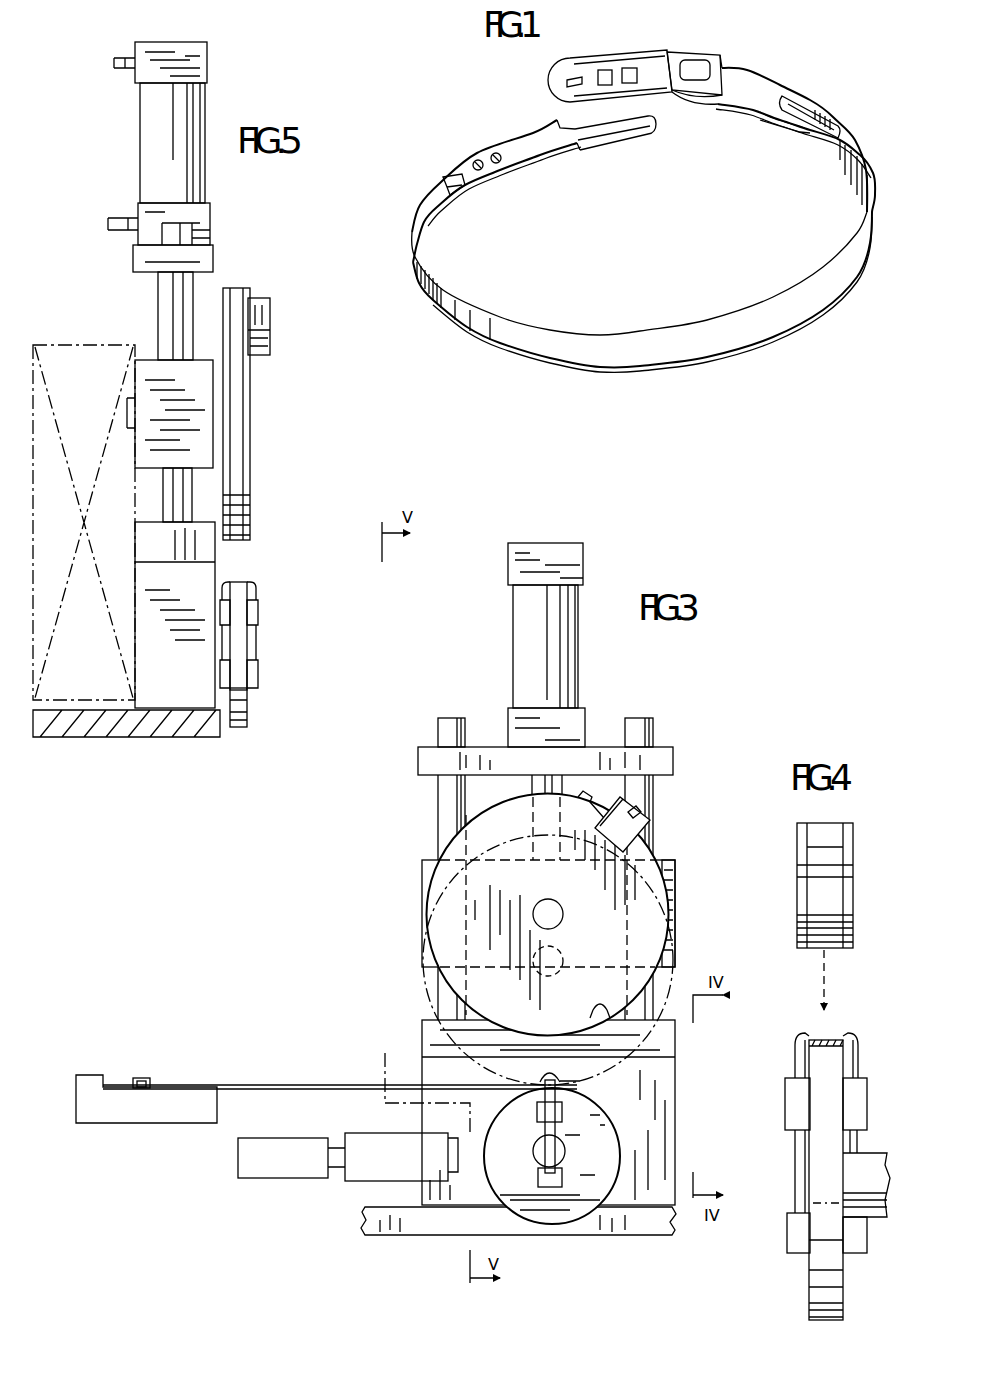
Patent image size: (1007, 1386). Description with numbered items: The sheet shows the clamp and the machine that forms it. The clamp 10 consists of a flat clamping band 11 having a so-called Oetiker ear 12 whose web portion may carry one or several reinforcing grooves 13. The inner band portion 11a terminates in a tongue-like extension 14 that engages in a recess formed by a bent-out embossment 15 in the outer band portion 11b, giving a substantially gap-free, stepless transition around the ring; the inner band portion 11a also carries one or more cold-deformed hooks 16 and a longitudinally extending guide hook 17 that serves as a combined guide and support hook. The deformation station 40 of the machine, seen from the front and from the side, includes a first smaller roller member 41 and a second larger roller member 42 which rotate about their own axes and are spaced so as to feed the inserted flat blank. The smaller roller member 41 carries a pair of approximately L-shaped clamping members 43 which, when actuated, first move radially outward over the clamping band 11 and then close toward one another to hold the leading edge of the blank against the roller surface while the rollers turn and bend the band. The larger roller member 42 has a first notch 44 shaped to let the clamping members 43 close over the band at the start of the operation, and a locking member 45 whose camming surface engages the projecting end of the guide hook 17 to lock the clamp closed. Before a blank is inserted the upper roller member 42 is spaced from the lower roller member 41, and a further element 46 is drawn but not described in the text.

In FIG. 1, the clamp 10 is at (656, 195).
In FIG. 3, the clamp 10 is at (328, 1079).
In FIG. 1, the clamping band 11 is at (603, 337).
In FIG. 3, the clamping band 11 is at (310, 1085).
In FIG. 1, the inner band portion 11a is at (537, 157).
In FIG. 1, the outer band portion 11b is at (803, 132).
In FIG. 1, the ear 12 is at (717, 58).
In FIG. 3, the ear 12 is at (148, 1078).
In FIG. 1, the reinforcing groove 13 is at (690, 62).
In FIG. 1, the tongue-like extension 14 is at (632, 127).
In FIG. 1, the bent-out embossment 15 is at (808, 113).
In FIG. 1, the cold-deformed hook 16 is at (495, 153).
In FIG. 1, the guide hook 17 is at (443, 177).
In FIG. 5, the deformation station 40 is at (186, 389).
In FIG. 3, the deformation station 40 is at (381, 889).
In FIG. 5, the first smaller roller member 41 is at (240, 707).
In FIG. 3, the first smaller roller member 41 is at (583, 1108).
In FIG. 4, the first smaller roller member 41 is at (830, 1258).
In FIG. 5, the second larger roller member 42 is at (238, 453).
In FIG. 3, the second larger roller member 42 is at (445, 940).
In FIG. 4, the second larger roller member 42 is at (853, 878).
In FIG. 5, the clamping members 43 is at (247, 585).
In FIG. 3, the clamping members 43 is at (550, 1148).
In FIG. 4, the clamping members 43 is at (802, 1052).
In FIG. 3, the first notch 44 is at (600, 1003).
In FIG. 5, the locking member 45 is at (268, 313).
In FIG. 3, the locking member 45 is at (648, 820).
In FIG. 3, the drive motor / actuator 46 is at (378, 1167).